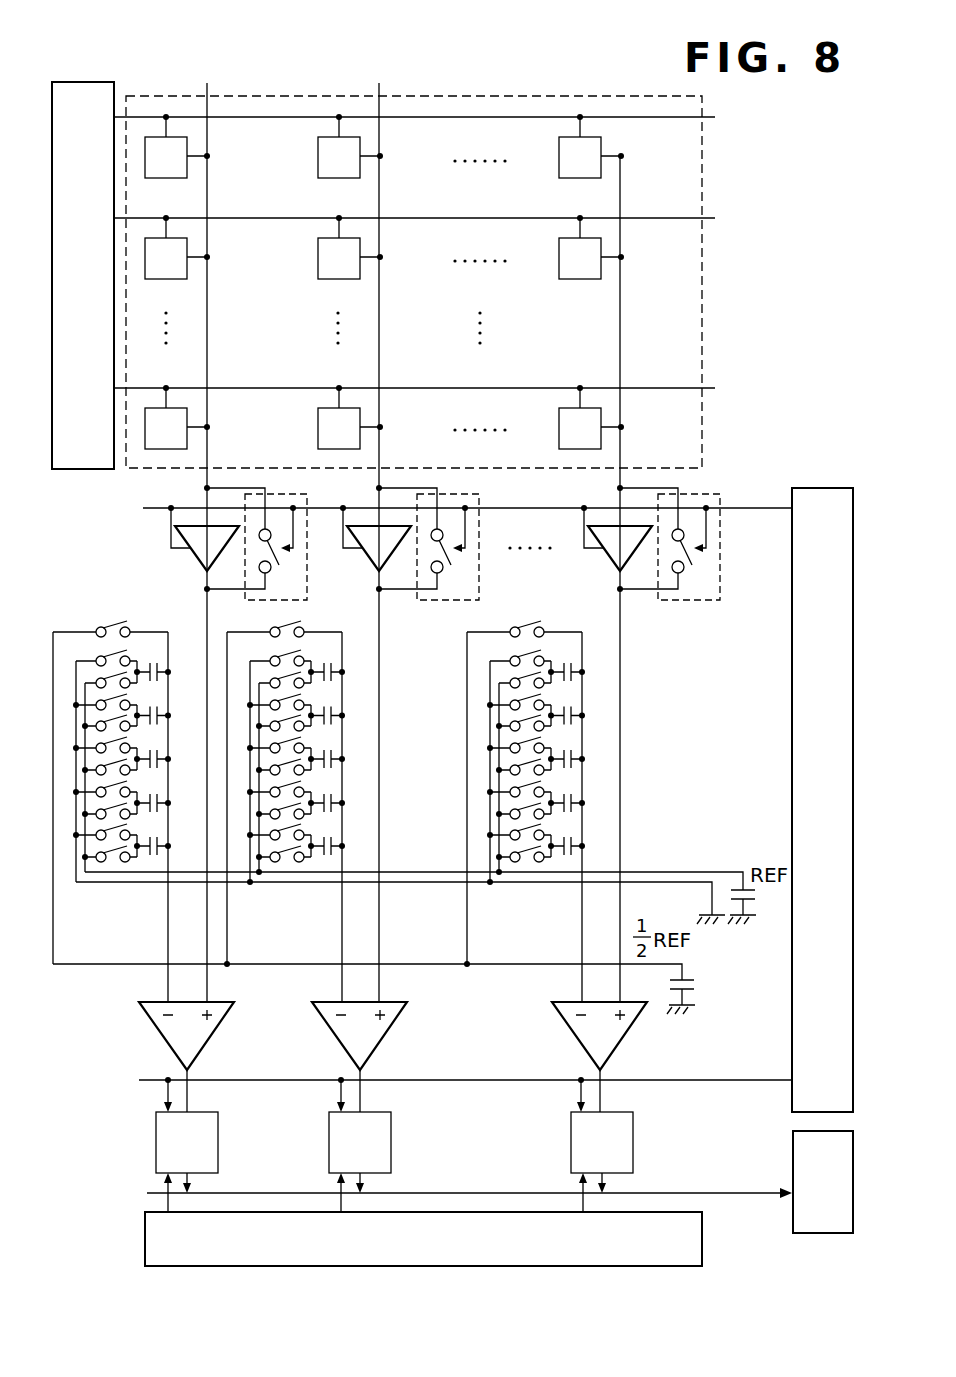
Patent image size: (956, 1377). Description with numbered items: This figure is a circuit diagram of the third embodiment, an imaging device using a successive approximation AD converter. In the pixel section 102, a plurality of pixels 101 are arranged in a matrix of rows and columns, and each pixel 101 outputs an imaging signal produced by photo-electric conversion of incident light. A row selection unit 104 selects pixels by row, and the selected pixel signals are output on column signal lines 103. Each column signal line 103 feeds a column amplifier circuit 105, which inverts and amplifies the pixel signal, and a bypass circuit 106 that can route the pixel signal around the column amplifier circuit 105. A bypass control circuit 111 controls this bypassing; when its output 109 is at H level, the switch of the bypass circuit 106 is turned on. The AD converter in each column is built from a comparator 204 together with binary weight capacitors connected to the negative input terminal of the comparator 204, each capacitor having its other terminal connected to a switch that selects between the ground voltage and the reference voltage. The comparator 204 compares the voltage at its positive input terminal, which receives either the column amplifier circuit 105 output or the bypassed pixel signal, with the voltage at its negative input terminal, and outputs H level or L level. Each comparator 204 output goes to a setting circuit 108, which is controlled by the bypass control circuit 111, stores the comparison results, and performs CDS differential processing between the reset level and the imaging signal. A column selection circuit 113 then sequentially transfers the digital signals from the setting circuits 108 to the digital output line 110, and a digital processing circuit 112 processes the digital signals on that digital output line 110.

The pixel 101 is at (187, 141).
The pixel section 102 is at (705, 150).
The column signal line 103 is at (209, 323).
The row selection unit 104 is at (94, 82).
The column amplifier circuit 105 is at (202, 571).
The bypass circuit 106 is at (307, 596).
The setting circuit 108 is at (218, 1150).
The output from the bypass control circuit 109 is at (758, 506).
The digital output line 110 is at (539, 1192).
The bypass control circuit 111 is at (828, 488).
The digital processing circuit 112 is at (792, 1141).
The column selection circuit 113 is at (144, 1243).
The comparator 204 is at (172, 1052).